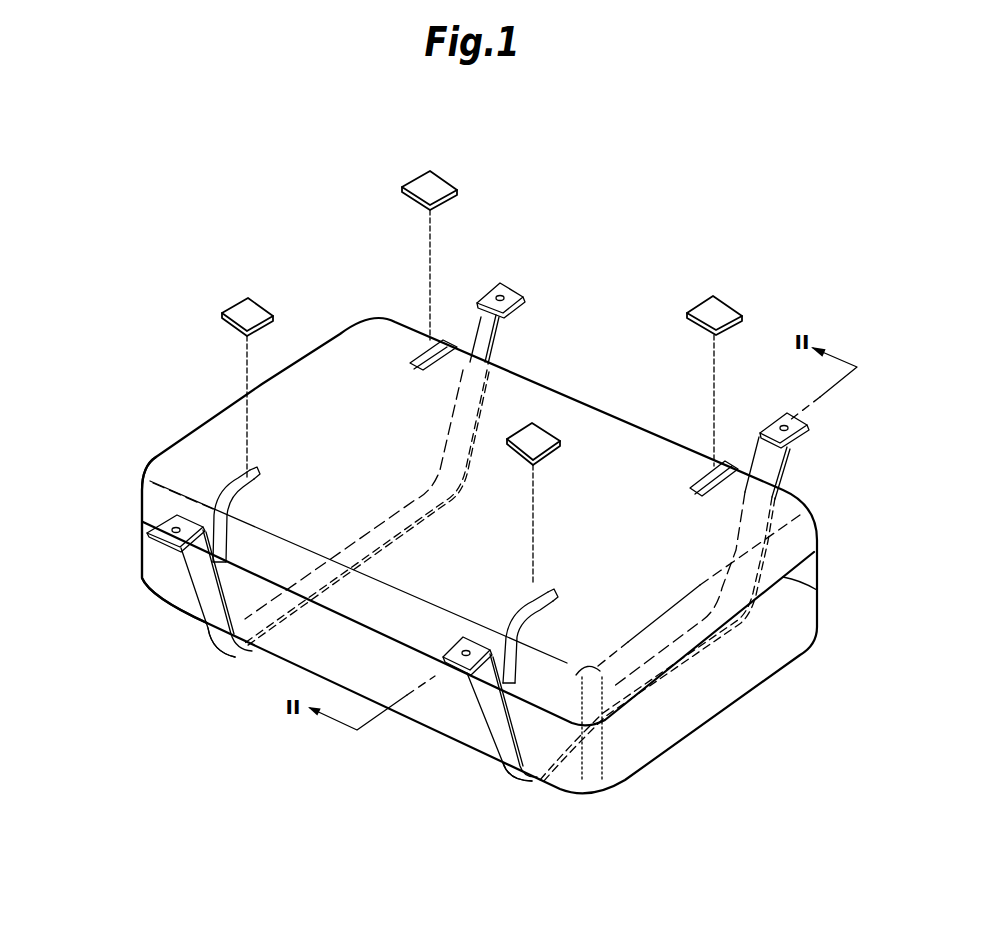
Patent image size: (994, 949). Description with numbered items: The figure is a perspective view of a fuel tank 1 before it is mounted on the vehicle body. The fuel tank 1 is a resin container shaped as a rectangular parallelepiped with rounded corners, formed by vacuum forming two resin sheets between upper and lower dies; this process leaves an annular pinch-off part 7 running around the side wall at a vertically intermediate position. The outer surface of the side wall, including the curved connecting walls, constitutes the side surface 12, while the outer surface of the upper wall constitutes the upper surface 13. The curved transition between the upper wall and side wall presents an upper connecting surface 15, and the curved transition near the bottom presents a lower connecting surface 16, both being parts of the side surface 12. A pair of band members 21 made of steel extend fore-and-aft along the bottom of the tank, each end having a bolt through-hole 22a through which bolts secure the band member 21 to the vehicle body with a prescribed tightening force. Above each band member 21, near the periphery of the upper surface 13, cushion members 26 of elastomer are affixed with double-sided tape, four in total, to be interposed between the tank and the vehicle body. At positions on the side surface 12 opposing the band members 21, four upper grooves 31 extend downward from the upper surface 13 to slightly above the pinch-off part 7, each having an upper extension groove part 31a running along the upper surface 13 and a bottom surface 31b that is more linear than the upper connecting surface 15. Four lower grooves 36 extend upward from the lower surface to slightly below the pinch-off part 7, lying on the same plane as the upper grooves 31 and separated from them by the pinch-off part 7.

The fuel tank 1 is at (588, 385).
The pinch-off part 7 is at (817, 590).
The side surface 12 is at (690, 710).
The upper surface 13 is at (637, 440).
The upper connecting surface 15 is at (162, 470).
The lower connecting surface 16 is at (160, 594).
The band member 21 is at (191, 597).
The bolt through-hole 22a is at (500, 283).
The cushion member 26 is at (251, 313).
The upper groove 31 is at (228, 558).
The upper extension groove part 31a is at (445, 337).
The bottom surface of the upper groove 31b is at (257, 467).
The lower groove 36 is at (221, 645).